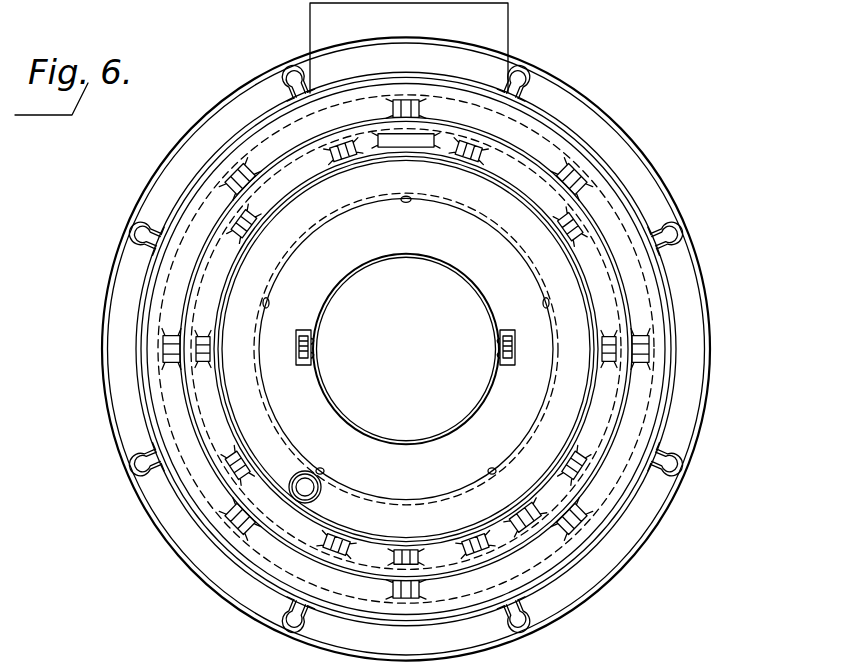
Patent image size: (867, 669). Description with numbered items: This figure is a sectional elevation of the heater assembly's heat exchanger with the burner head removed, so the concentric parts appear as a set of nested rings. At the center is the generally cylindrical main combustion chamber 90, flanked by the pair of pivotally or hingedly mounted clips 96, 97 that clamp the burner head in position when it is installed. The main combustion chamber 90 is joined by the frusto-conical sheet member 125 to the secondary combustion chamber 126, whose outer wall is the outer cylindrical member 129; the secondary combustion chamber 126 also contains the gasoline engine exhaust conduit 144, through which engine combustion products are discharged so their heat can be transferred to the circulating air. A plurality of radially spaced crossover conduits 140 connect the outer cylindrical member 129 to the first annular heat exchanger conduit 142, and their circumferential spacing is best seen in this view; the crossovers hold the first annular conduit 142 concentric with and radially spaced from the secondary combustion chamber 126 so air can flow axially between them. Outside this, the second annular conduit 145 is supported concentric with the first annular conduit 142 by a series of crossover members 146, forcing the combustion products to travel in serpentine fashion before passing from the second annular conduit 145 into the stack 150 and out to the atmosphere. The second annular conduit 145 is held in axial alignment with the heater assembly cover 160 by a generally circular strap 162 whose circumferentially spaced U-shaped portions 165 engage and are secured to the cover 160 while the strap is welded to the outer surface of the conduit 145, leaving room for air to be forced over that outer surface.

The main combustion chamber 90 is at (357, 260).
The clip 96 is at (303, 367).
The clip 97 is at (513, 355).
The frusto-conical sheet member 125 is at (432, 233).
The secondary combustion chamber 126 is at (438, 193).
The outer cylindrical member 129 is at (406, 142).
The crossover conduits 140 is at (330, 165).
The first annular heat exchanger conduit 142 is at (547, 513).
The gasoline engine exhaust conduit 144 is at (320, 490).
The second annular conduit 145 is at (565, 157).
The crossover members 146 is at (438, 105).
The stack 150 is at (514, 30).
The heater assembly cover 160 is at (655, 171).
The circular strap 162 is at (318, 78).
The U-shaped portions 165 is at (300, 77).